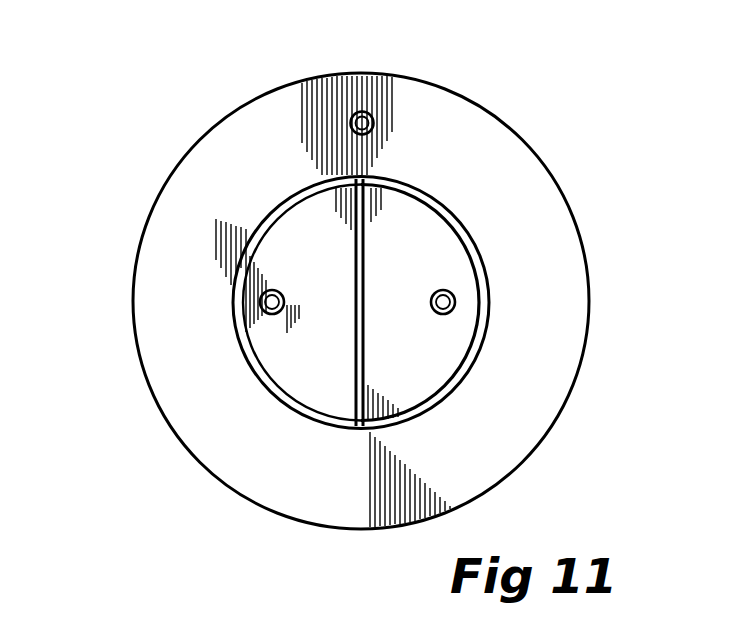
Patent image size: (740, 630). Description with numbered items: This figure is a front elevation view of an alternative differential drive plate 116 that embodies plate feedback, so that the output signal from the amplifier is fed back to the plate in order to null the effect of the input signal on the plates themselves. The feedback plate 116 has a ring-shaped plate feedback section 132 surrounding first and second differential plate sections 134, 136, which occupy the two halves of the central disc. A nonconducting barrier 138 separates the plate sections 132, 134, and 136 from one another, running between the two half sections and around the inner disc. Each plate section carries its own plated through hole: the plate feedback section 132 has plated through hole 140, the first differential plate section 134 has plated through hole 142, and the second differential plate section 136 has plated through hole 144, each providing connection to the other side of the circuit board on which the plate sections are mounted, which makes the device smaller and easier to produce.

The differential drive plate 116 is at (171, 156).
The plate feedback section 132 is at (493, 164).
The first differential plate section 134 is at (340, 267).
The second differential plate section 136 is at (441, 267).
The nonconducting barrier 138 is at (358, 427).
The plated through hole 140 is at (362, 111).
The plated through hole 142 is at (260, 301).
The plated through hole 144 is at (458, 302).